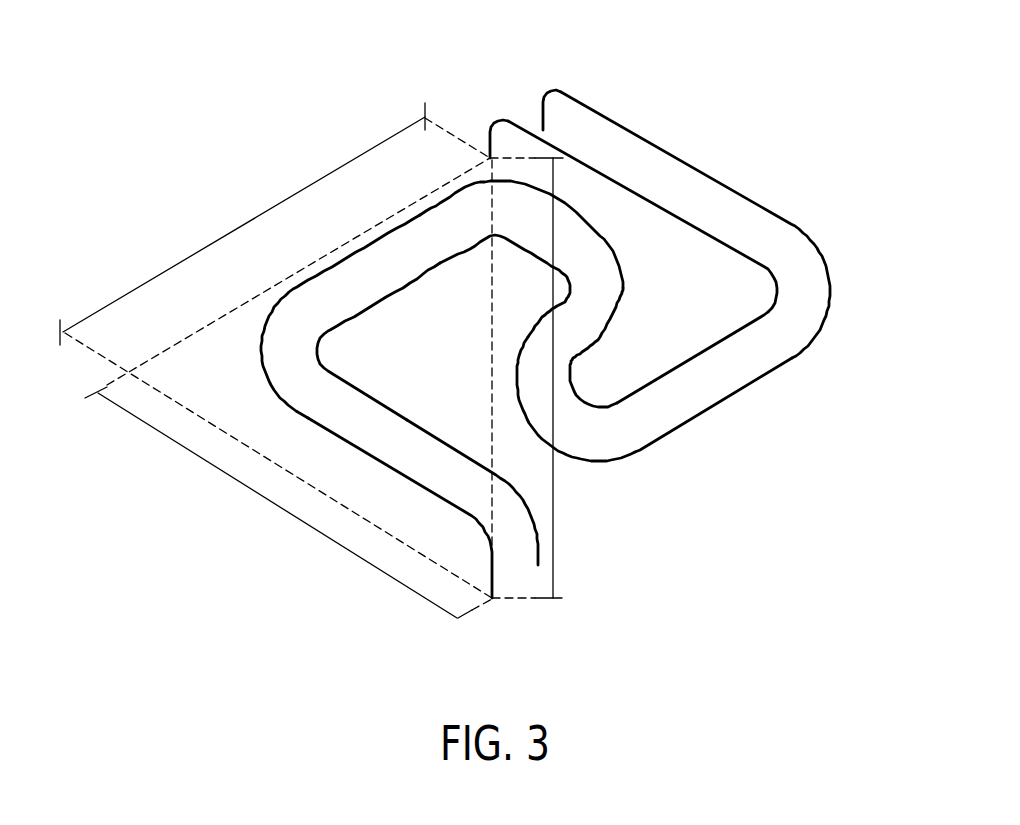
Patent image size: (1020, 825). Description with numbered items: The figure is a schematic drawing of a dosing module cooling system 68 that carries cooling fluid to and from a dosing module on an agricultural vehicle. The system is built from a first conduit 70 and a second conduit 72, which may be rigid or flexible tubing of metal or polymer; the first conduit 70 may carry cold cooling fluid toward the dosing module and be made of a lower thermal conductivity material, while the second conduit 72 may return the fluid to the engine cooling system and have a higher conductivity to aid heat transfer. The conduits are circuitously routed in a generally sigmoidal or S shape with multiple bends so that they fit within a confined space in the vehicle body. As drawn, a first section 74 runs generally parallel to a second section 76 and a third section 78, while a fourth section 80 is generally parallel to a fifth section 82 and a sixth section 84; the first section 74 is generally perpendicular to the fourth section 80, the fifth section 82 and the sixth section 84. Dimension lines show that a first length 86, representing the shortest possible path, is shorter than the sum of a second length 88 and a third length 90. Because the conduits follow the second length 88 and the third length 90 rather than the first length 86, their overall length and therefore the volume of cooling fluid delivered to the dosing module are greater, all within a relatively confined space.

The dosing module cooling system 68 is at (545, 311).
The first conduit 70 is at (500, 117).
The second conduit 72 is at (547, 90).
The first section 74 is at (365, 462).
The second section 76 is at (572, 206).
The third section 78 is at (693, 152).
The fourth section 80 is at (718, 414).
The fifth section 82 is at (596, 355).
The sixth section 84 is at (415, 291).
The first length 86 is at (553, 513).
The second length 88 is at (278, 505).
The third length 90 is at (240, 223).